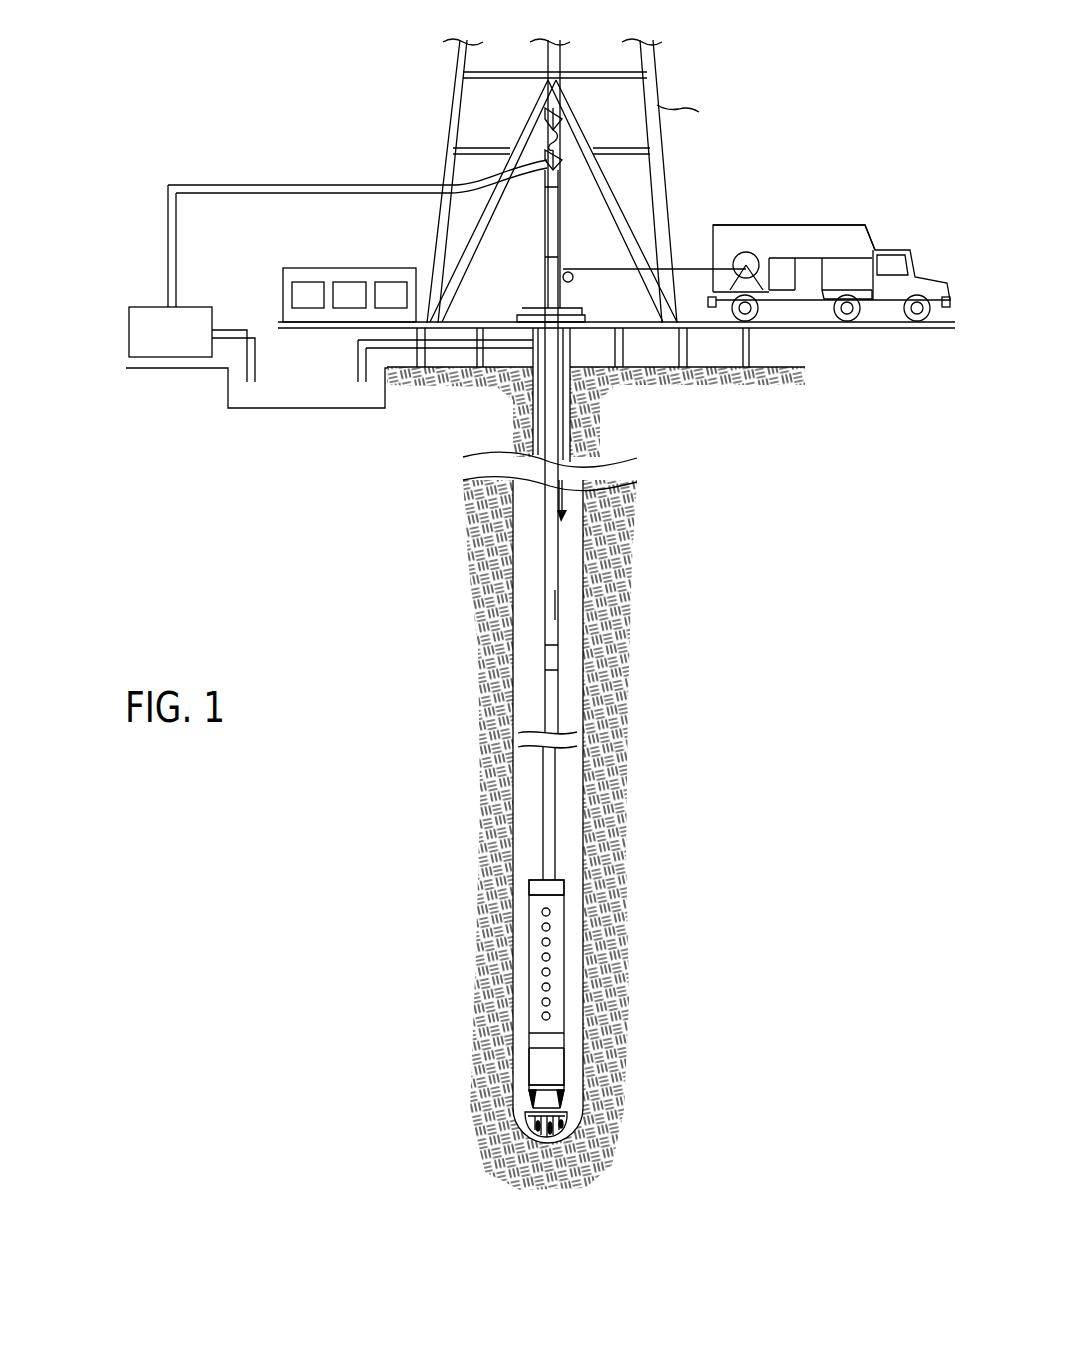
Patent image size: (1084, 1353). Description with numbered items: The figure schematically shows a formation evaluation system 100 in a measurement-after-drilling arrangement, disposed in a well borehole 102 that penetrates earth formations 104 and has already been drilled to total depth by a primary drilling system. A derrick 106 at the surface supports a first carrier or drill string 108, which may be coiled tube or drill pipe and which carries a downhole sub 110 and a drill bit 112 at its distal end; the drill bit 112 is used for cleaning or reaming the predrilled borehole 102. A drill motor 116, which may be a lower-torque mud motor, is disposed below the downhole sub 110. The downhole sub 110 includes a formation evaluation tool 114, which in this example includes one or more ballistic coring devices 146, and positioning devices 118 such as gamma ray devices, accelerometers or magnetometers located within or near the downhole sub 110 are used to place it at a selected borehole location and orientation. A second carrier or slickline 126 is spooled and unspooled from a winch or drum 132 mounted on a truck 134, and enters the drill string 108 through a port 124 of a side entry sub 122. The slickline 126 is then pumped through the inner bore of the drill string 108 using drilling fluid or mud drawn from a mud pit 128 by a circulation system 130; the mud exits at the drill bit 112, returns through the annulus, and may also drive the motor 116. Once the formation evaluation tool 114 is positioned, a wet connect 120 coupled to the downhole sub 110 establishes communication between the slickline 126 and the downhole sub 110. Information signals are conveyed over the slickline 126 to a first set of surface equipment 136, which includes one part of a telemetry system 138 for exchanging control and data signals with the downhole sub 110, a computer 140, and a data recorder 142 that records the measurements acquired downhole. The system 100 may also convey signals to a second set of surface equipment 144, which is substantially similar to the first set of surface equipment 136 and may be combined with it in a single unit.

The formation evaluation system 100 is at (270, 95).
The well borehole 102 is at (512, 522).
The earth formations 104 is at (598, 1150).
The derrick 106 is at (656, 105).
The drill string 108 is at (555, 800).
The downhole sub 110 is at (564, 905).
The drill bit 112 is at (527, 1108).
The formation evaluation tool 114 is at (537, 928).
The drill motor 116 is at (564, 1068).
The positioning devices 118 is at (528, 1037).
The wet connect 120 is at (537, 887).
The side entry sub 122 is at (555, 605).
The port 124 is at (563, 518).
The slickline 126 is at (562, 426).
The mud pit 128 is at (327, 408).
The circulation system 130 is at (129, 328).
The winch or drum 132 is at (742, 252).
The truck 134 is at (933, 277).
The first set of surface equipment 136 is at (850, 225).
The telemetry system 138 is at (300, 282).
The computer 140 is at (347, 282).
The data recorder 142 is at (395, 282).
The second set of surface equipment 144 is at (283, 277).
The ballistic coring devices 146 is at (543, 970).